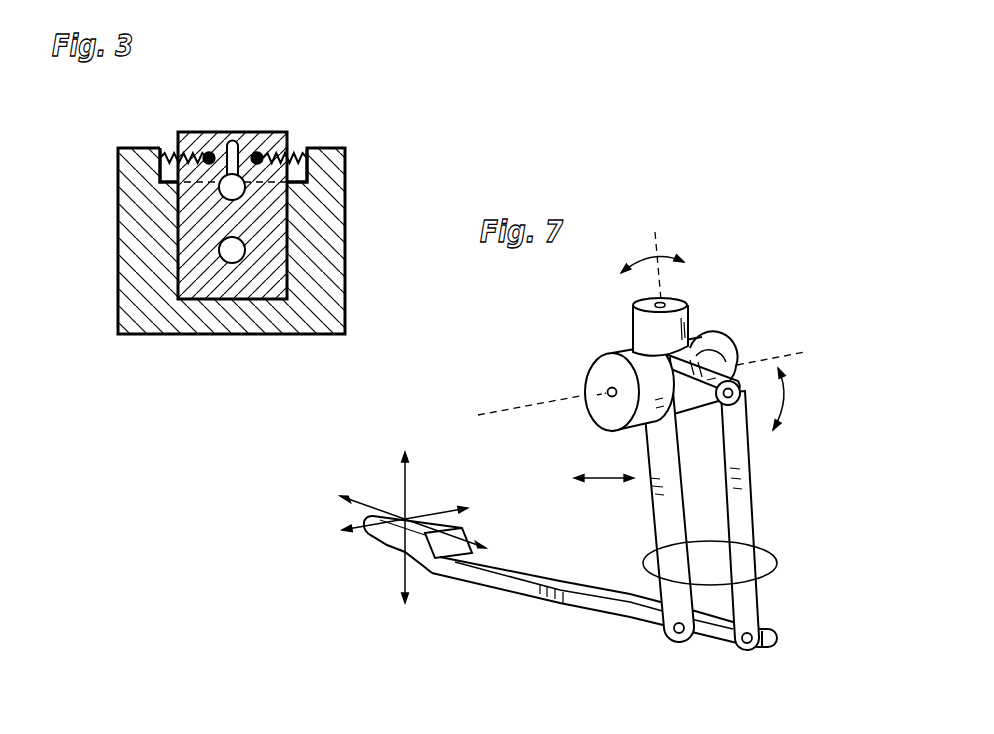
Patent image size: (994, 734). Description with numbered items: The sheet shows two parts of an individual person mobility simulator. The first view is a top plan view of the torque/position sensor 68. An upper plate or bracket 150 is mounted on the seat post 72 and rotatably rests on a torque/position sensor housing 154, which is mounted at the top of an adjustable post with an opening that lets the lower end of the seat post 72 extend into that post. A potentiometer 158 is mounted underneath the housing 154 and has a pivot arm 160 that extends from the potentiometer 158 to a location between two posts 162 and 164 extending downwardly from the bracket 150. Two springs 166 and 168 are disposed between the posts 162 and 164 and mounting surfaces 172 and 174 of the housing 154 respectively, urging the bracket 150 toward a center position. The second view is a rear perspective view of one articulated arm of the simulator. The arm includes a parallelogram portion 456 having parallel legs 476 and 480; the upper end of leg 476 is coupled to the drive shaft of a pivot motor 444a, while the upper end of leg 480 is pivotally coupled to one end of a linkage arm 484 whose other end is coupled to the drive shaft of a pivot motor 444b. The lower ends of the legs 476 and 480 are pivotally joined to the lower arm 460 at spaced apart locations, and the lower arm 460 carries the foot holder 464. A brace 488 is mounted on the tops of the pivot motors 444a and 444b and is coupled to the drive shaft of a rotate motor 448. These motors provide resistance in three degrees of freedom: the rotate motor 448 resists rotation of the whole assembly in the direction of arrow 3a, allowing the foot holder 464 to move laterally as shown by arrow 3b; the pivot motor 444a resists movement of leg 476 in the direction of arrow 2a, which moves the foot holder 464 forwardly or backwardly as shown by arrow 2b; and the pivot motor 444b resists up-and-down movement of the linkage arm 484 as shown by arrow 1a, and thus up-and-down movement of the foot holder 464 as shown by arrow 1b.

In FIG. 3, the torque/position sensor 68 is at (207, 234).
In FIG. 3, the torque/position sensor housing 154 is at (130, 167).
In FIG. 3, the upper plate or bracket 150 is at (211, 234).
In FIG. 3, the potentiometer 158 is at (234, 190).
In FIG. 3, the seat post 72 is at (234, 248).
In FIG. 3, the pivot arm 160 is at (237, 140).
In FIG. 3, the post 162 is at (209, 152).
In FIG. 3, the post 164 is at (257, 152).
In FIG. 3, the spring 166 is at (168, 152).
In FIG. 3, the spring 168 is at (297, 152).
In FIG. 3, the mounting surface 172 is at (161, 166).
In FIG. 3, the mounting surface 174 is at (307, 152).
In FIG. 7, the rotate motor 448 is at (650, 328).
In FIG. 7, the pivot motor 444a is at (597, 392).
In FIG. 7, the pivot motor 444b is at (712, 350).
In FIG. 7, the linkage arm 484 is at (740, 365).
In FIG. 7, the brace 488 is at (693, 340).
In FIG. 7, the leg 476 is at (657, 450).
In FIG. 7, the leg 480 is at (740, 512).
In FIG. 7, the parallelogram portion 456 is at (777, 563).
In FIG. 7, the lower arm 460 is at (542, 588).
In FIG. 7, the foot holder 464 is at (382, 547).
In FIG. 7, the arrow 1a is at (646, 391).
In FIG. 7, the arrow 2a is at (604, 493).
In FIG. 7, the arrow 3a is at (656, 266).
In FIG. 7, the arrow 1b is at (409, 514).
In FIG. 7, the arrow 2b is at (409, 507).
In FIG. 7, the arrow 3b is at (405, 506).